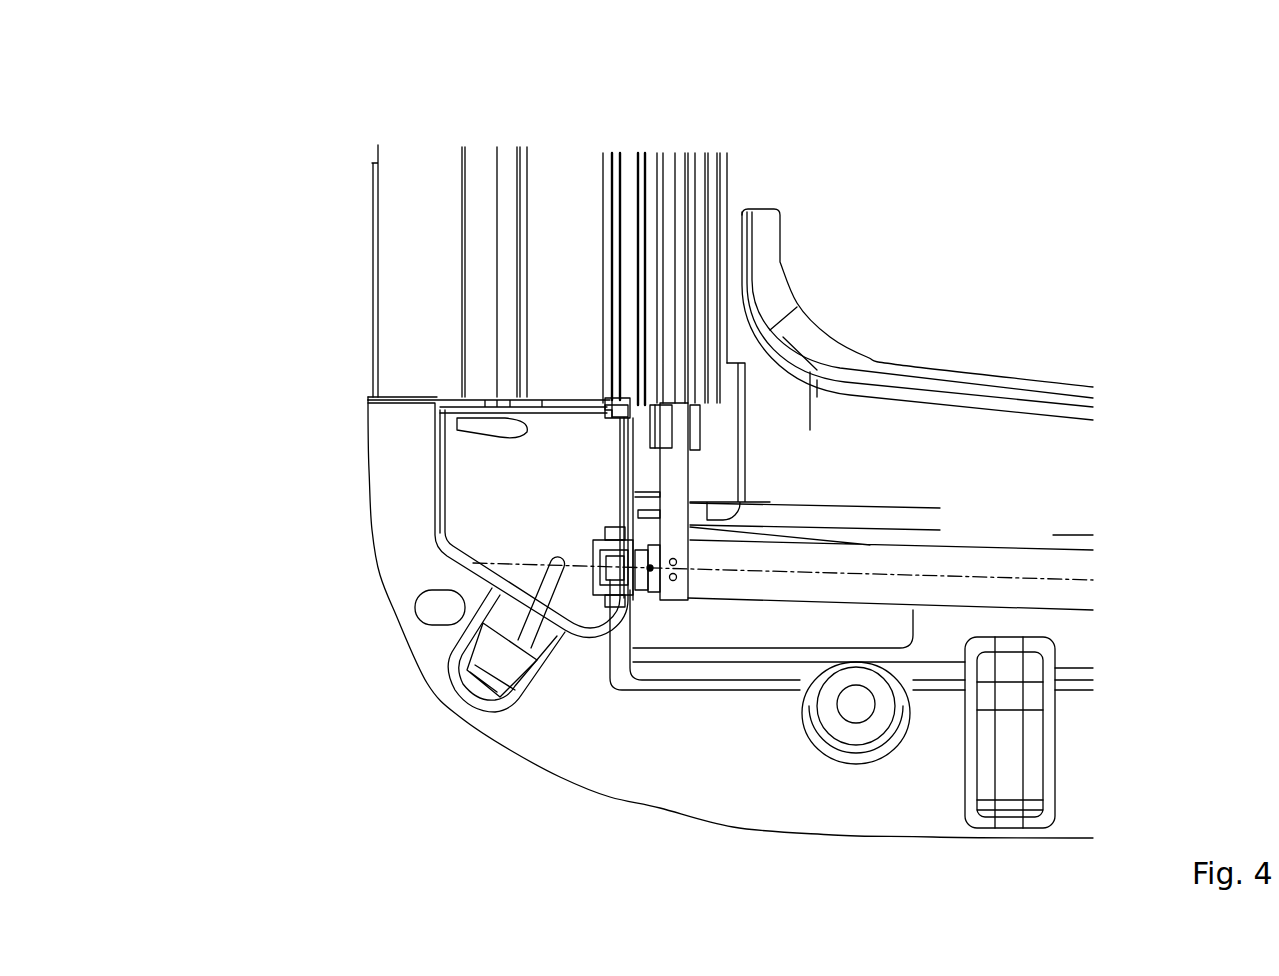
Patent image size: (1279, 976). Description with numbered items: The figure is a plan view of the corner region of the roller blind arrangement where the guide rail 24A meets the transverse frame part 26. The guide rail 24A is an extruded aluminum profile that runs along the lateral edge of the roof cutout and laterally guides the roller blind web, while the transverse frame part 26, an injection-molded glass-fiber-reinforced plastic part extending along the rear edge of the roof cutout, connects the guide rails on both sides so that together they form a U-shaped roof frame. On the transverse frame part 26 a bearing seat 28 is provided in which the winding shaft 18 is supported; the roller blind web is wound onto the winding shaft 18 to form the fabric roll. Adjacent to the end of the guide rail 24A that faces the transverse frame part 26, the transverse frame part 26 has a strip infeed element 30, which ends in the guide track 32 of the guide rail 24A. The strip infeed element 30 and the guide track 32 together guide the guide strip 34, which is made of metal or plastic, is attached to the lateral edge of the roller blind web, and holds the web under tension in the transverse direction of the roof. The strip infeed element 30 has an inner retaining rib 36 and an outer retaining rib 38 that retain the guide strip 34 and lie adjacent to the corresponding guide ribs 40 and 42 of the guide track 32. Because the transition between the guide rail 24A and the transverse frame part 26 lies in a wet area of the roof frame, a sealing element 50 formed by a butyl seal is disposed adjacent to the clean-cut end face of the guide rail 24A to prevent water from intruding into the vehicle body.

The winding shaft 18 is at (1058, 597).
The guide rail 24A is at (413, 223).
The transverse frame part 26 is at (828, 805).
The bearing seat 28 is at (598, 585).
The strip infeed element 30 is at (648, 437).
The guide track 32 is at (695, 228).
The guide strip 34 is at (673, 480).
The inner retaining rib 36 is at (695, 447).
The outer retaining rib 38 is at (625, 401).
The guide rib 40 is at (697, 167).
The guide rib 42 is at (680, 165).
The sealing element 50 is at (637, 437).